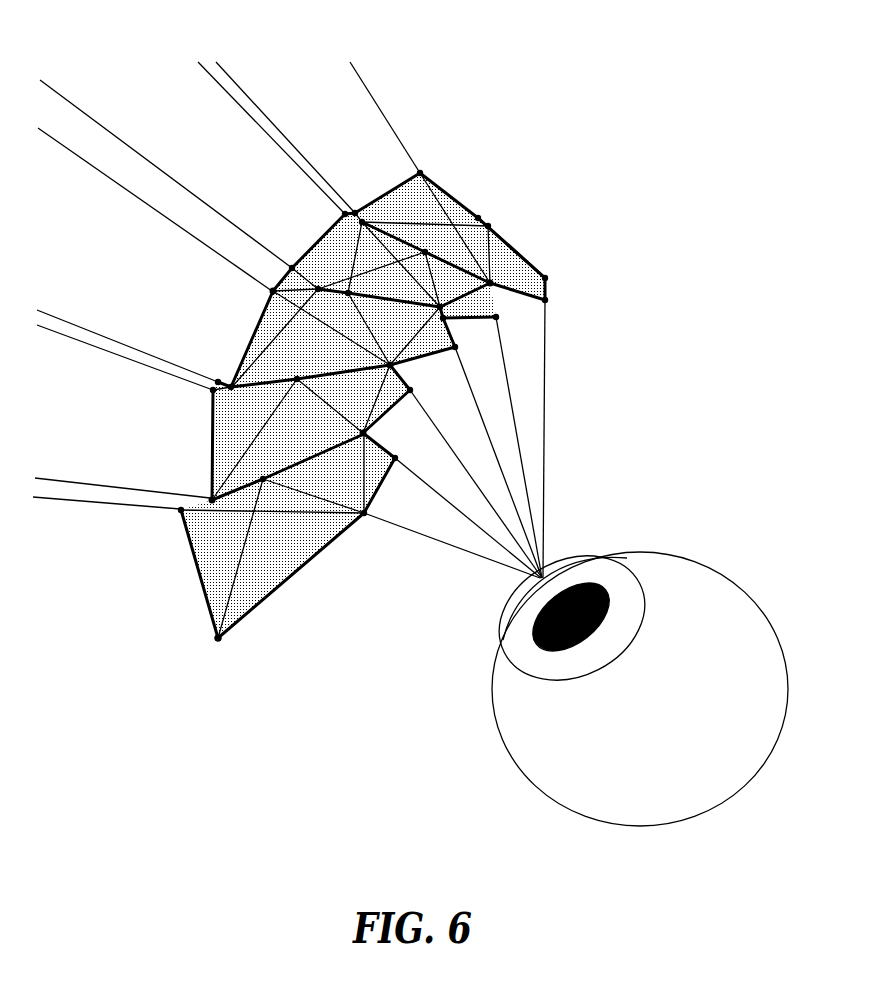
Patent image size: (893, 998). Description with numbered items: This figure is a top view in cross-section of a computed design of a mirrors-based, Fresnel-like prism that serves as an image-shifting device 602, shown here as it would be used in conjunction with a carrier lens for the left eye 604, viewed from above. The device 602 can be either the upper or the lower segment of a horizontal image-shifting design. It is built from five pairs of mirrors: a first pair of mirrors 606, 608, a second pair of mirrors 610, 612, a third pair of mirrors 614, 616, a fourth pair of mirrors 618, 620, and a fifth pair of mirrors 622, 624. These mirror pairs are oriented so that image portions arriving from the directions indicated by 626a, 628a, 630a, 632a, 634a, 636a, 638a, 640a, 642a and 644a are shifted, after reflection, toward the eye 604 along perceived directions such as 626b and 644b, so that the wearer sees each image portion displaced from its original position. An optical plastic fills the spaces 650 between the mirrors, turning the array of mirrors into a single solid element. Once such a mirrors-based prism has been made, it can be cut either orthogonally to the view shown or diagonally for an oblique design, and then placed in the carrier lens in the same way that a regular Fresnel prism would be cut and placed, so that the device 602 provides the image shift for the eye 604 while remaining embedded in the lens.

The image-shifting device 602 is at (516, 198).
The left eye 604 is at (527, 793).
The mirror 606 is at (251, 592).
The mirror 608 is at (313, 457).
The mirror 610 is at (258, 468).
The mirror 612 is at (253, 400).
The mirror 614 is at (280, 378).
The mirror 616 is at (273, 291).
The mirror 618 is at (350, 280).
The mirror 620 is at (338, 216).
The mirror 622 is at (392, 230).
The mirror 624 is at (510, 255).
The spaces between the mirrors 650 is at (210, 575).
The image portion direction 626a is at (218, 638).
The image portion direction 628a is at (33, 497).
The image portion direction 630a is at (35, 478).
The image portion direction 632a is at (37, 325).
The image portion direction 634a is at (37, 310).
The image portion direction 636a is at (38, 128).
The image portion direction 638a is at (40, 80).
The image portion direction 640a is at (198, 62).
The image portion direction 642a is at (216, 62).
The image portion direction 644a is at (350, 62).
The perceived image portion direction 626b is at (364, 514).
The perceived image portion direction 644b is at (545, 300).